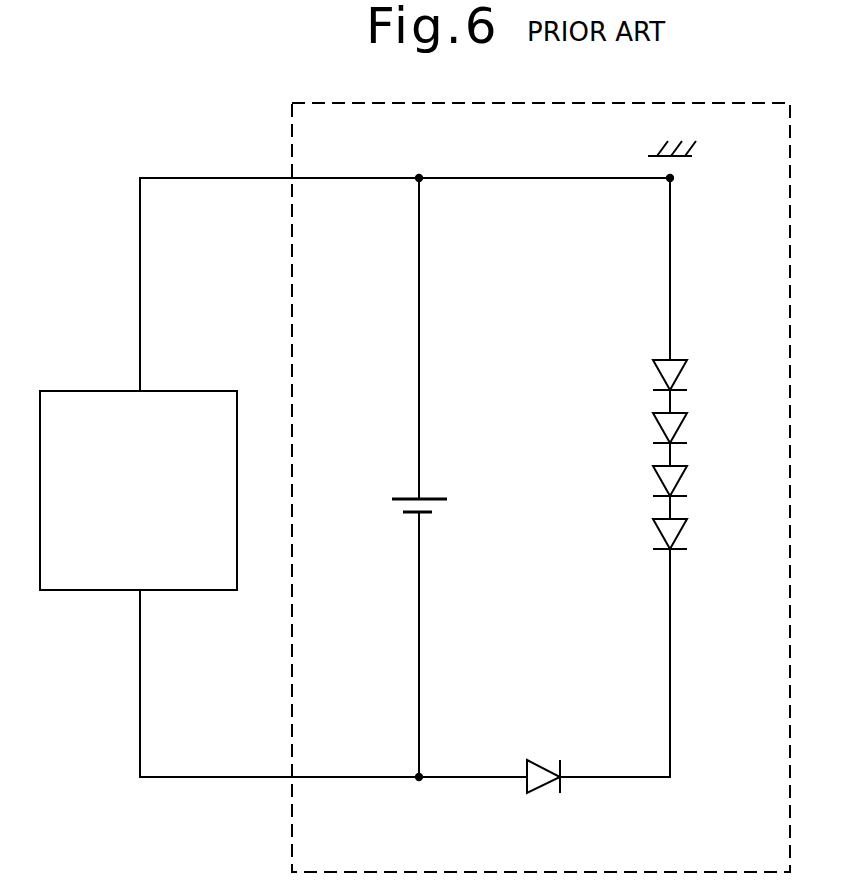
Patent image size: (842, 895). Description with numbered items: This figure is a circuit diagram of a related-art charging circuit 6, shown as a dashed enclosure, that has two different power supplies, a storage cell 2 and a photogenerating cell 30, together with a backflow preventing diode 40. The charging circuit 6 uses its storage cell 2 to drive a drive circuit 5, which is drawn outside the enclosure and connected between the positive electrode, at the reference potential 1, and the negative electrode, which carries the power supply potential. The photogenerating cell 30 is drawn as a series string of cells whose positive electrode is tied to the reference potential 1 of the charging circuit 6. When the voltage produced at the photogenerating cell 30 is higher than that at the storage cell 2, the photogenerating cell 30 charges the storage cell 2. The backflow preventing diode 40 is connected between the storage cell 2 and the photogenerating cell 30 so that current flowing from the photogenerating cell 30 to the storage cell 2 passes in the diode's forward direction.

The reference potential 1 is at (686, 164).
The storage cell 2 is at (401, 520).
The drive circuit 5 is at (92, 590).
The charging circuit 6 is at (291, 812).
The photogenerating cell 30 is at (695, 437).
The backflow preventing diode 40 is at (521, 794).